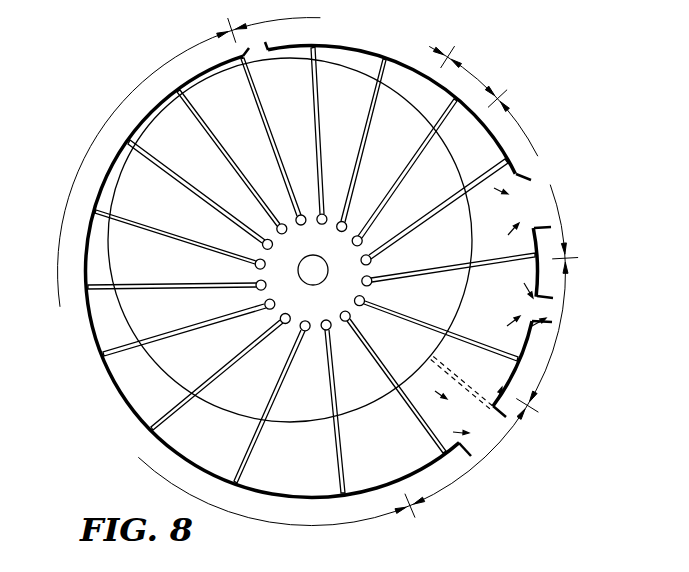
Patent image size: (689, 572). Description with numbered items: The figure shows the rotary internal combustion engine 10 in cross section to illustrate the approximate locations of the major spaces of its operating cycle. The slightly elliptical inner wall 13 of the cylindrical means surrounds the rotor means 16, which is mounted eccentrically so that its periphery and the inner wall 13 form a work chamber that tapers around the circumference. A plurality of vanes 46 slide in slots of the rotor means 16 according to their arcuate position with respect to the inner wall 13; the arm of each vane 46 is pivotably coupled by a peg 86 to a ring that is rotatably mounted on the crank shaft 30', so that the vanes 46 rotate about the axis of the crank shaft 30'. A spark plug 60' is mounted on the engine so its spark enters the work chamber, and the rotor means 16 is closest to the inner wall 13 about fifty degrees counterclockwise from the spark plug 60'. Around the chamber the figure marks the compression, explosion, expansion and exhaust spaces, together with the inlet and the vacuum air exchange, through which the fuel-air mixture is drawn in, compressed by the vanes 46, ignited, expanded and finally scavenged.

The rotary internal combustion engine 10 is at (52, 230).
The inner wall 13 is at (312, 498).
The rotor means 16 is at (220, 407).
The crank shaft 30' is at (327, 270).
The vane 46 is at (471, 343).
The spark plug 60' is at (268, 39).
The peg 86 is at (300, 225).